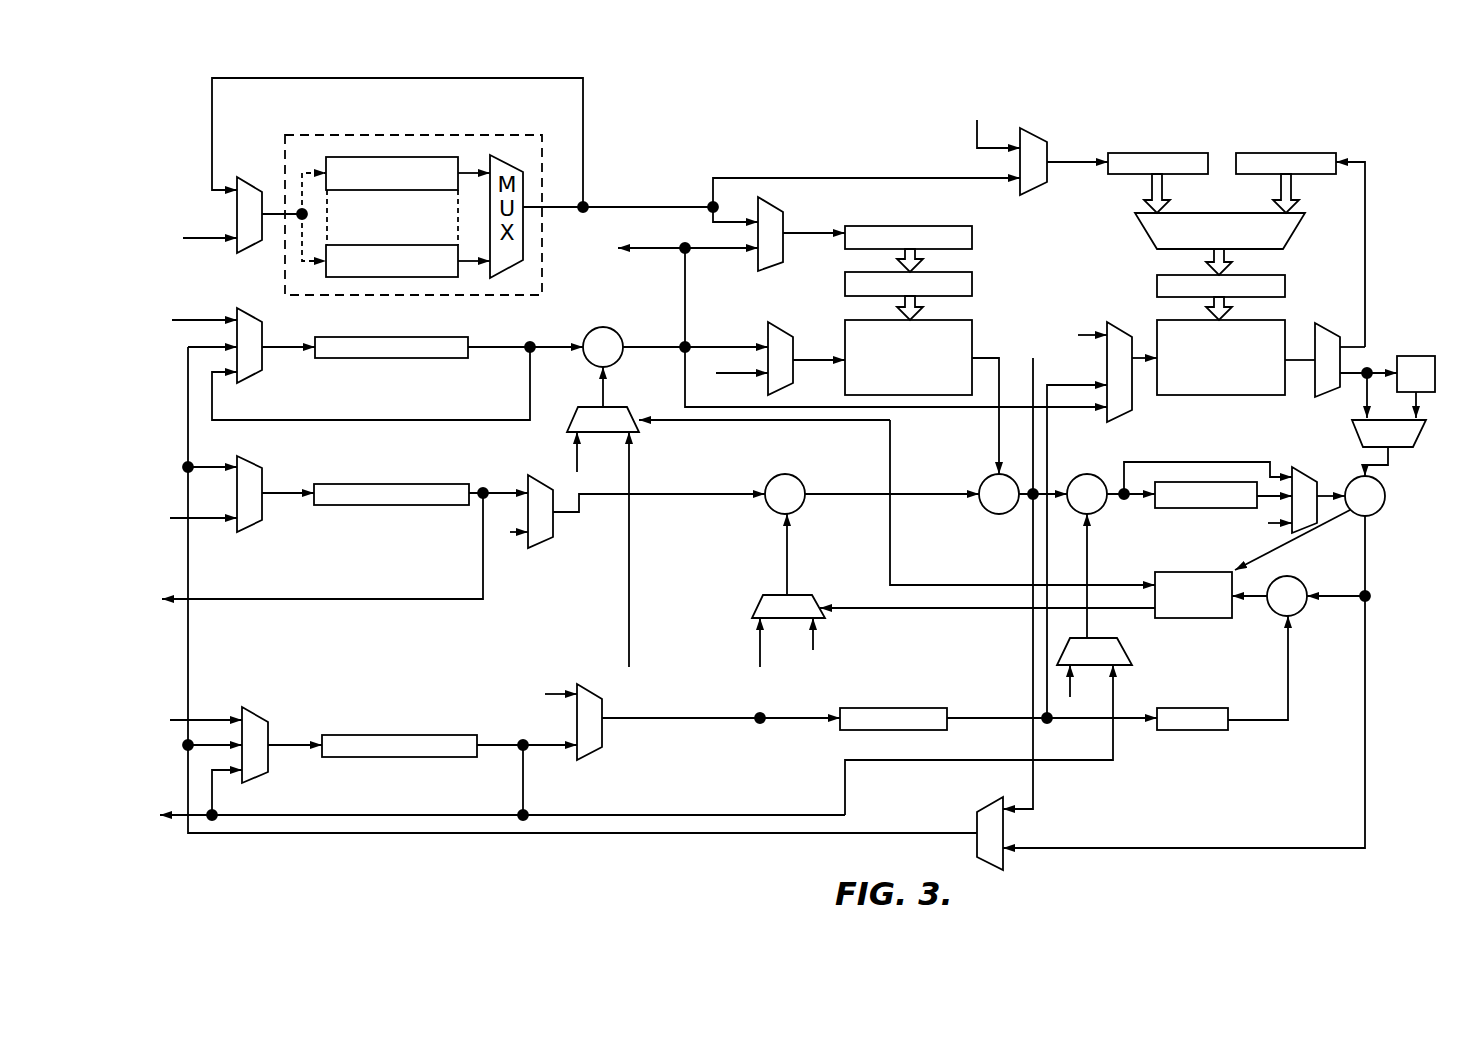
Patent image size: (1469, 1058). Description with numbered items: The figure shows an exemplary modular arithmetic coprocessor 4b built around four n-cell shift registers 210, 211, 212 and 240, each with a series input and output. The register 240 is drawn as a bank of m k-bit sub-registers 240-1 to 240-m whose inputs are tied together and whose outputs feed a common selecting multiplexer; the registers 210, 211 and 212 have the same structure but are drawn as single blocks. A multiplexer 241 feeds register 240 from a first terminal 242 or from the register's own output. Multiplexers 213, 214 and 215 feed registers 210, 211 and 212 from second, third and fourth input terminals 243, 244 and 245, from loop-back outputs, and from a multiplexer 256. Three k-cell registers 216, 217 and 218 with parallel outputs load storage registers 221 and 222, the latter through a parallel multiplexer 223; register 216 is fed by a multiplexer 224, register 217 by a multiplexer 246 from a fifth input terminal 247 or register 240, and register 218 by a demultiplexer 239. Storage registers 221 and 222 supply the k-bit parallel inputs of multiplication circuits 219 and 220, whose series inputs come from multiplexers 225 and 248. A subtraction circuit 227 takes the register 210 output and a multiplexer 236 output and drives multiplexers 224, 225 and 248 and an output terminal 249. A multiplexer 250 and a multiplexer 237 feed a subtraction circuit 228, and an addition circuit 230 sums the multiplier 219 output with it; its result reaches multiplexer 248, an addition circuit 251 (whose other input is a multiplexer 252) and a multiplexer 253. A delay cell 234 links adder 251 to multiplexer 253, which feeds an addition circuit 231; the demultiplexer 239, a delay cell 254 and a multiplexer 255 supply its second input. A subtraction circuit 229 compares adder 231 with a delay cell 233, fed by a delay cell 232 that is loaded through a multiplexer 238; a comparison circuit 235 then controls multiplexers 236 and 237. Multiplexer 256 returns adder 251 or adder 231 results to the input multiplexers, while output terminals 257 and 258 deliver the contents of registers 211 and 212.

The coprocessor 4b is at (795, 147).
The shift register 210 is at (432, 358).
The shift register 211 is at (393, 505).
The shift register 212 is at (362, 735).
The multiplexer 213 is at (254, 380).
The multiplexer 214 is at (257, 527).
The multiplexer 215 is at (262, 708).
The k cell register 216 is at (972, 238).
The k cell register 217 is at (1142, 153).
The k cell register 218 is at (1268, 153).
The multiplication circuit 219 is at (972, 330).
The multiplication circuit 220 is at (1222, 396).
The k cell storage register 221 is at (972, 284).
The k cell storage register 222 is at (1285, 287).
The multiplexer 223 is at (1300, 232).
The multiplexer 224 is at (785, 228).
The multiplexer 225 is at (777, 322).
The subtraction circuit 227 is at (586, 332).
The subtraction circuit 228 is at (790, 474).
The subtraction circuit 229 is at (1296, 577).
The addition circuit 230 is at (998, 515).
The addition circuit 231 is at (1384, 506).
The delay cell 232 is at (890, 708).
The delay cell 233 is at (1202, 733).
The delay cell 234 is at (1200, 508).
The comparison circuit 235 is at (1222, 620).
The multiplexer 236 is at (566, 421).
The multiplexer 237 is at (757, 618).
The multiplexer 238 is at (592, 752).
The demultiplexer 239 is at (1325, 397).
The shift register 240 is at (412, 133).
The sub-register 240-m is at (408, 173).
The sub-register 240-1 is at (408, 261).
The multiplexer 241 is at (251, 178).
The first terminal 242 is at (204, 232).
The second input terminal 243 is at (190, 318).
The third input terminal 244 is at (214, 520).
The fourth input terminal 245 is at (200, 718).
The multiplexer 246 is at (1038, 192).
The fifth input terminal 247 is at (977, 135).
The multiplexer 248 is at (1112, 322).
The output terminal 249 is at (645, 250).
The multiplexer 250 is at (548, 550).
The addition circuit 251 is at (1086, 474).
The multiplexer 252 is at (1128, 652).
The multiplexer 253 is at (1302, 467).
The delay cell 254 is at (1415, 356).
The multiplexer 255 is at (1420, 436).
The multiplexer 256 is at (977, 820).
The output terminal 257 is at (183, 599).
The output terminal 258 is at (178, 815).